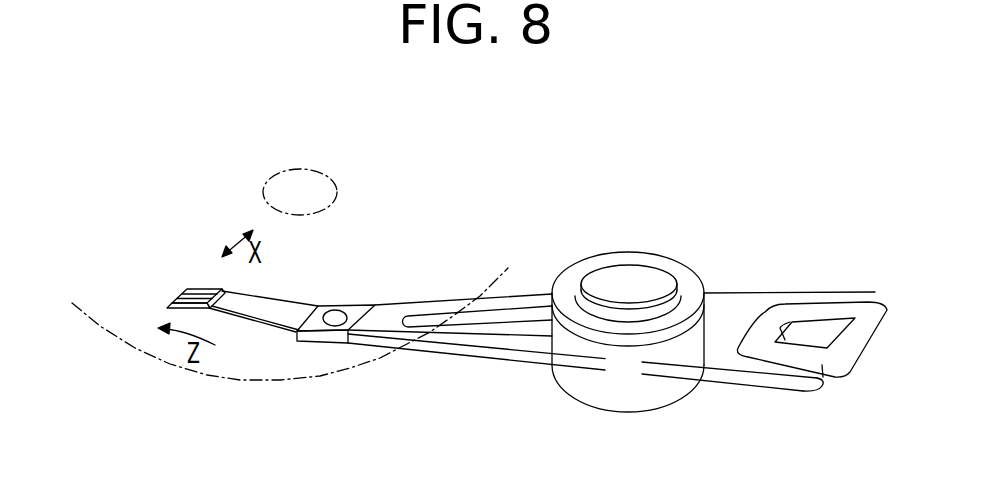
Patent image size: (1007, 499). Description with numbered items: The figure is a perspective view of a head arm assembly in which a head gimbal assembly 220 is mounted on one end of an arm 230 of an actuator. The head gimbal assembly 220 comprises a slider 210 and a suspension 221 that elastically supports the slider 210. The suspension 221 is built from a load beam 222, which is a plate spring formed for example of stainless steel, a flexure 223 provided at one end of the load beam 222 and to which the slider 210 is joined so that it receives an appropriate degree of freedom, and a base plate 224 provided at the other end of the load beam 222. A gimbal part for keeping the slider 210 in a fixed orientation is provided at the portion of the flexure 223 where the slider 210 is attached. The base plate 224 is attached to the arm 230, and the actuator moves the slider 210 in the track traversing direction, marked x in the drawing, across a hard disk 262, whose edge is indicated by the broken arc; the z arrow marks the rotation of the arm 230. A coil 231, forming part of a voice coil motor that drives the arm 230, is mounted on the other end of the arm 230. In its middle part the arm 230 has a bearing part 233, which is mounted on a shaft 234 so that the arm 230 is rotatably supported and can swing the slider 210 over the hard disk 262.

The slider 210 is at (200, 288).
The head gimbal assembly 220 is at (249, 326).
The suspension 221 is at (282, 297).
The load beam 222 is at (366, 304).
The flexure 223 is at (176, 302).
The base plate 224 is at (380, 303).
The arm 230 is at (625, 341).
The coil 231 is at (870, 353).
The bearing part 233 is at (633, 292).
The shaft 234 is at (640, 278).
The hard disk 262 is at (207, 375).